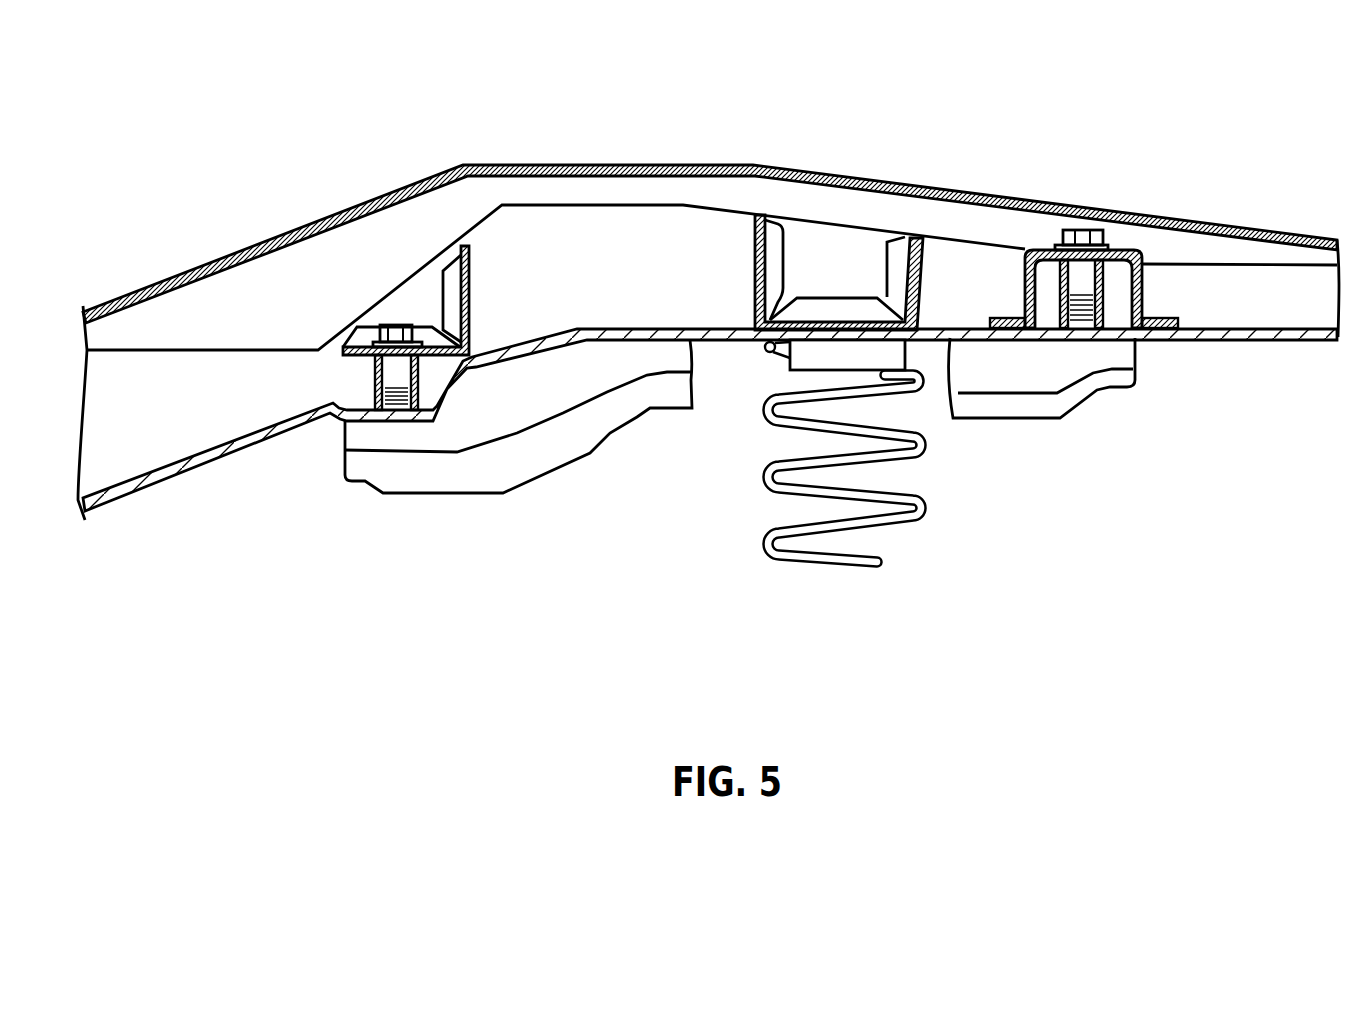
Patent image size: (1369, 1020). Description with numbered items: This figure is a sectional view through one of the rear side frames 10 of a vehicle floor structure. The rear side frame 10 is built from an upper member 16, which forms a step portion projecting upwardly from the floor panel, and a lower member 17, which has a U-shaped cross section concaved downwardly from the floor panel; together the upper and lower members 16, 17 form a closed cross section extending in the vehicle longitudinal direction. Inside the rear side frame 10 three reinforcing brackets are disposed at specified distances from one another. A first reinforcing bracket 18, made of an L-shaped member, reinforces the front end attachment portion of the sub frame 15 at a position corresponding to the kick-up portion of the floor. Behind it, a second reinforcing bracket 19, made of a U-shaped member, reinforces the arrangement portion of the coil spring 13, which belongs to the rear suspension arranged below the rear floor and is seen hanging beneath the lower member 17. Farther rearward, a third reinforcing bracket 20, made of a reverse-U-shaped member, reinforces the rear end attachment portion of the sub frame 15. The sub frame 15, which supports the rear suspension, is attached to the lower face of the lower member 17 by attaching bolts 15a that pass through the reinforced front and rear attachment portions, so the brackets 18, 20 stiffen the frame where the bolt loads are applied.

The rear side frame 10 is at (1268, 210).
The coil spring 13 is at (928, 507).
The sub frame 15 is at (596, 466).
The attaching bolt 15a is at (392, 323).
The upper member 16 is at (953, 186).
The lower member 17 is at (1213, 340).
The first reinforcing bracket 18 is at (470, 293).
The second reinforcing bracket 19 is at (753, 257).
The third reinforcing bracket 20 is at (1143, 287).